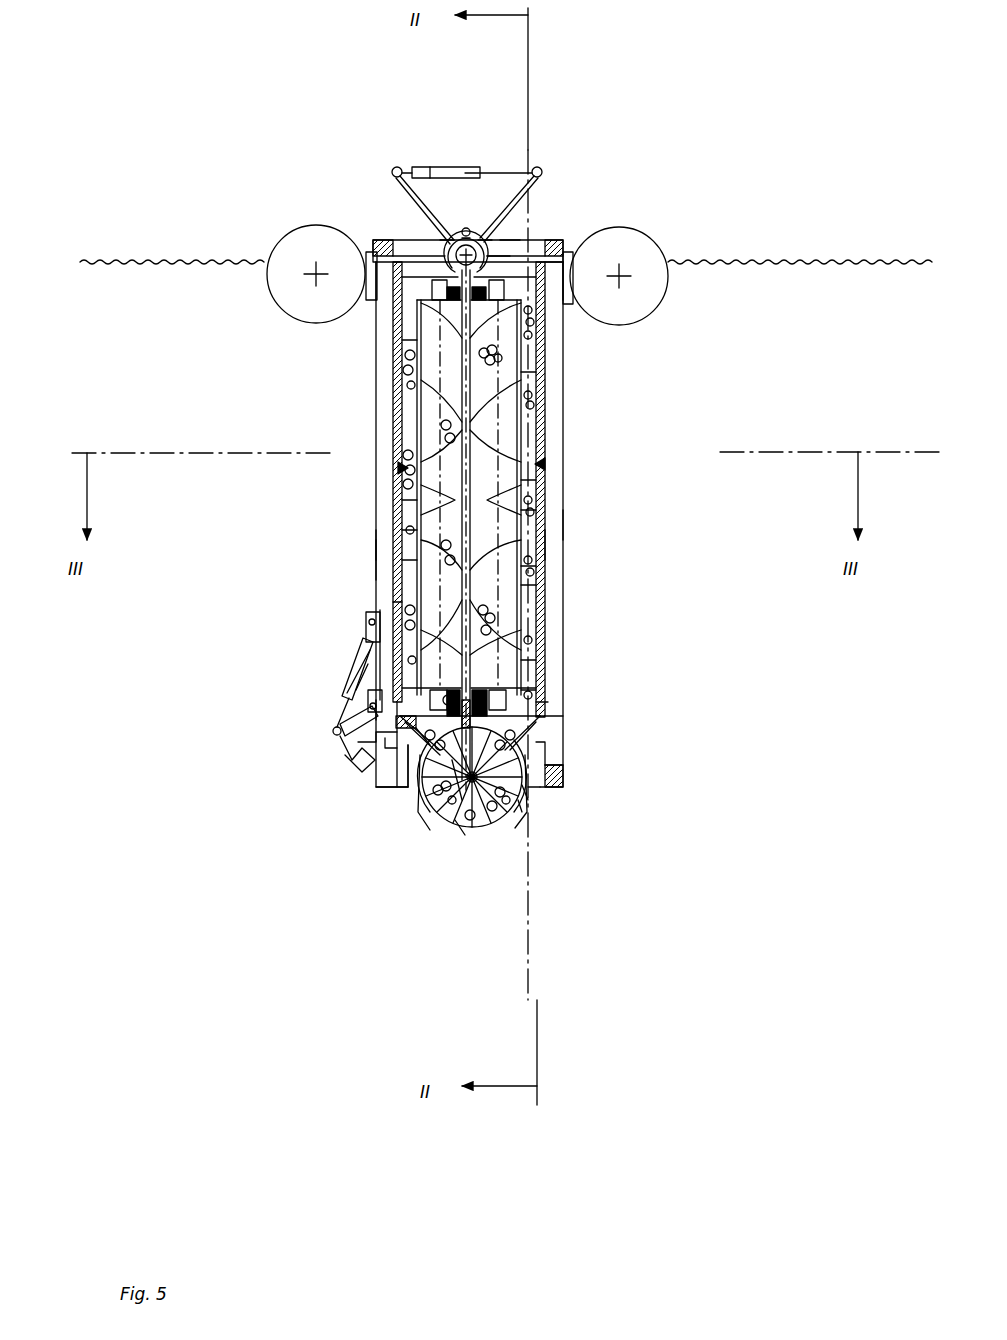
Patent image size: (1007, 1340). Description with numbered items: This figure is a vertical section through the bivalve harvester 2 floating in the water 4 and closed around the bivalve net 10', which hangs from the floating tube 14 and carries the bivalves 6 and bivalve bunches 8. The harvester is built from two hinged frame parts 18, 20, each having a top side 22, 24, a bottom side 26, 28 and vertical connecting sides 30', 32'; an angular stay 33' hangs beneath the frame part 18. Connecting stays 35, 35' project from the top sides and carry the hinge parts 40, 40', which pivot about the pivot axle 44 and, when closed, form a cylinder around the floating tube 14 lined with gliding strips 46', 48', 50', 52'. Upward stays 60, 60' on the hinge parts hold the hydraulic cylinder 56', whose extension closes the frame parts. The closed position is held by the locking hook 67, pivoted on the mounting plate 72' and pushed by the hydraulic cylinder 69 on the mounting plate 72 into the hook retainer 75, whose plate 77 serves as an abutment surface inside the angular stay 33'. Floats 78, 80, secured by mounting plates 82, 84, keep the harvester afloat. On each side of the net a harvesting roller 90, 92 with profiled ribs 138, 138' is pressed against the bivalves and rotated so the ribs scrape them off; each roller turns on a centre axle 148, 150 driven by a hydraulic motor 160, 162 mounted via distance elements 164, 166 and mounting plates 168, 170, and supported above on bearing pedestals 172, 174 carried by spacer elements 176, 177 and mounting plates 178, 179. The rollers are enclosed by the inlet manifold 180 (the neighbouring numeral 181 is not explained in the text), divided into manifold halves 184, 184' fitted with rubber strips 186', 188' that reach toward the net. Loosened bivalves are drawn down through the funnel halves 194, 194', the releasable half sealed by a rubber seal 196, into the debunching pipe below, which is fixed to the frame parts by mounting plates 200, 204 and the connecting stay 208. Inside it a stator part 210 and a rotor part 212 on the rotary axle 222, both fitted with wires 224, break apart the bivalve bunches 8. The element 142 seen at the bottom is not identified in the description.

The bivalve harvester 2 is at (200, 702).
The water 4 is at (730, 380).
The bivalves 6 is at (516, 815).
The bivalve bunches 8 is at (548, 426).
The debris material 10' is at (509, 528).
The floating tube 14 is at (465, 240).
The frame part 18 is at (376, 558).
The frame part 20 is at (573, 526).
The top side 22 is at (385, 250).
The top side 24 is at (560, 252).
The bottom side 26 is at (392, 788).
The bottom side 28 is at (560, 776).
The connecting side 30' is at (339, 545).
The connecting side 32' is at (596, 545).
The angular stay 33' is at (354, 805).
The connecting stay 35 is at (310, 231).
The connecting stay 35' is at (608, 228).
The hinge part 40 is at (369, 182).
The hinge part 40' is at (496, 169).
The pivot axle 44 is at (464, 228).
The gliding strip 46' is at (637, 171).
The gliding strip 48' is at (637, 171).
The gliding strip 50' is at (637, 171).
The gliding strip 52' is at (637, 171).
The actuator cylinder 56' is at (467, 139).
The stay 60 is at (405, 172).
The stay 60' is at (537, 160).
The locking hook 67 is at (350, 746).
The hydraulic cylinder 69 is at (358, 660).
The mounting plate 72 is at (325, 631).
The mounting plate 72' is at (319, 708).
The hook retainer 75 is at (376, 760).
The plate 77 is at (425, 765).
The float 78 is at (300, 305).
The float 80 is at (660, 292).
The float bracket 82 is at (368, 282).
The mounting plate 84 is at (572, 280).
The harvesting roller 90 is at (386, 475).
The harvesting roller 92 is at (548, 566).
The profiled ribs 138 is at (401, 479).
The profiled ribs 138' is at (587, 580).
The wheel 142 is at (478, 830).
The centre axle 148 is at (440, 372).
The centre axle 150 is at (536, 372).
The hydraulic motor 160 is at (402, 564).
The hydraulic motor 162 is at (540, 700).
The distance element 164 is at (402, 602).
The distance element 166 is at (548, 702).
The mounting plate 168 is at (398, 624).
The mounting plate 170 is at (560, 716).
The bearing pedestal 172 is at (418, 340).
The bearing pedestal 174 is at (510, 250).
The spacer element 176 is at (402, 320).
The spacer element 177 is at (548, 345).
The mounting plate 178 is at (396, 305).
The mounting plate 179 is at (556, 320).
The inlet manifold 180 is at (465, 481).
The flow path 181 is at (398, 468).
The manifold half 184 is at (358, 515).
The manifold half 184' is at (591, 495).
The rubber strip 186' is at (585, 637).
The rubber strip 188' is at (585, 664).
The funnel half 194 is at (391, 818).
The funnel half 194' is at (601, 733).
The rubber seal 196 is at (463, 800).
The mounting plate 200 is at (460, 832).
The mounting plate 204 is at (525, 800).
The connecting stay 208 is at (540, 787).
The stator part 210 is at (431, 865).
The rotor part 212 is at (500, 830).
The rotary axle 222 is at (548, 755).
The wires 224 is at (470, 850).